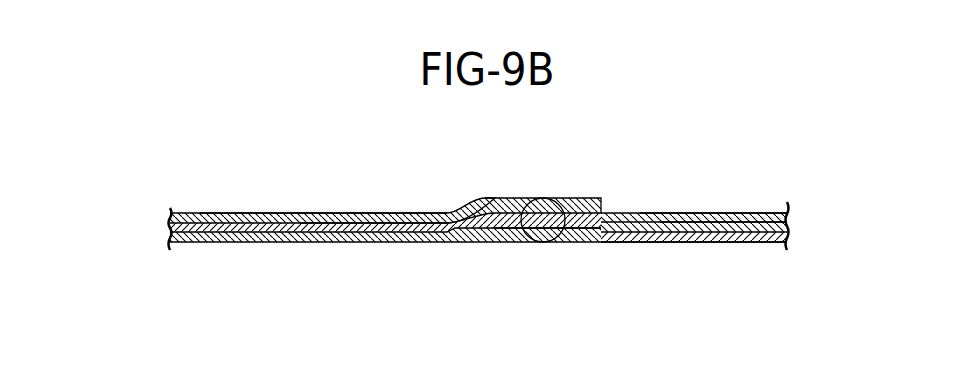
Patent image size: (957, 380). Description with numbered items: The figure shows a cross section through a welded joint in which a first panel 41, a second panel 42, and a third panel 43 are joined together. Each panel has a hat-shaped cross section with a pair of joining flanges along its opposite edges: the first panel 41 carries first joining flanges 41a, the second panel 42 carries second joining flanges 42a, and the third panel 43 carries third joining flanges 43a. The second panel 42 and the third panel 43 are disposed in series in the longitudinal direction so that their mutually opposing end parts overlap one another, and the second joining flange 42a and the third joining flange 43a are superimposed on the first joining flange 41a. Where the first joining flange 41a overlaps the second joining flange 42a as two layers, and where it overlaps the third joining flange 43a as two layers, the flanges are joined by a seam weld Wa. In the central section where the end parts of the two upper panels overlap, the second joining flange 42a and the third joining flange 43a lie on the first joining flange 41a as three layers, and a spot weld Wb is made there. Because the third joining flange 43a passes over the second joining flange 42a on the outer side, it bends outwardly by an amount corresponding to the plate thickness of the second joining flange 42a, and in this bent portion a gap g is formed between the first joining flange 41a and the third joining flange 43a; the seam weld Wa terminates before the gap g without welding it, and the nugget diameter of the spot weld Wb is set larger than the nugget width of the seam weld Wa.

The first panel 41 is at (478, 252).
The first joining flange 41a is at (587, 228).
The second panel 42 is at (695, 199).
The second joining flange 42a is at (748, 212).
The third panel 43 is at (274, 204).
The third joining flange 43a is at (398, 213).
The gap g is at (487, 217).
The seam weld Wa is at (382, 232).
The spot weld Wb is at (546, 198).